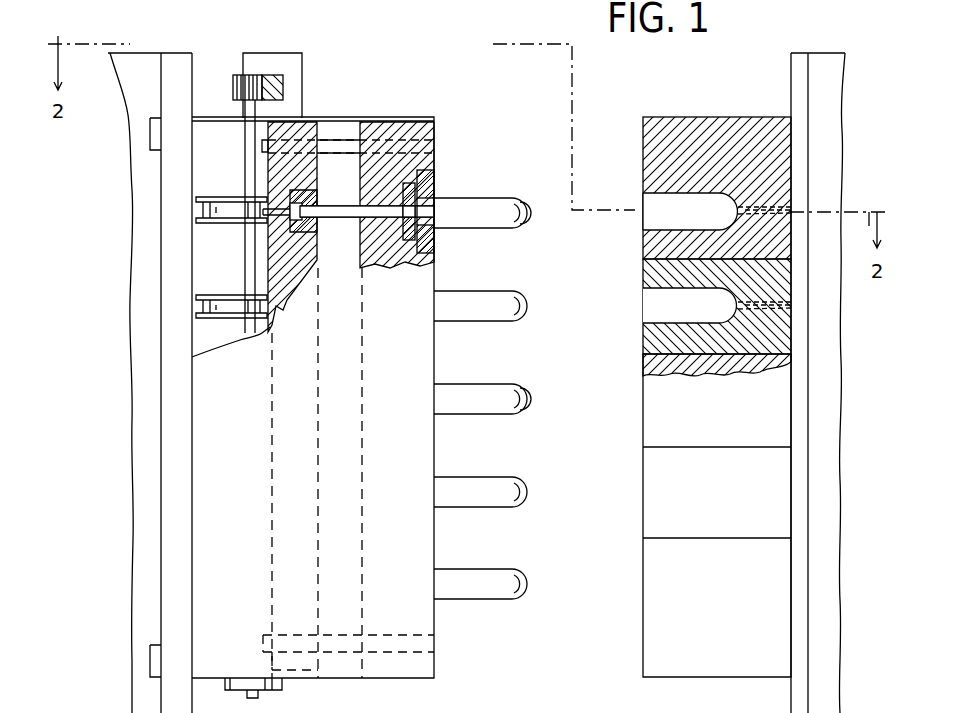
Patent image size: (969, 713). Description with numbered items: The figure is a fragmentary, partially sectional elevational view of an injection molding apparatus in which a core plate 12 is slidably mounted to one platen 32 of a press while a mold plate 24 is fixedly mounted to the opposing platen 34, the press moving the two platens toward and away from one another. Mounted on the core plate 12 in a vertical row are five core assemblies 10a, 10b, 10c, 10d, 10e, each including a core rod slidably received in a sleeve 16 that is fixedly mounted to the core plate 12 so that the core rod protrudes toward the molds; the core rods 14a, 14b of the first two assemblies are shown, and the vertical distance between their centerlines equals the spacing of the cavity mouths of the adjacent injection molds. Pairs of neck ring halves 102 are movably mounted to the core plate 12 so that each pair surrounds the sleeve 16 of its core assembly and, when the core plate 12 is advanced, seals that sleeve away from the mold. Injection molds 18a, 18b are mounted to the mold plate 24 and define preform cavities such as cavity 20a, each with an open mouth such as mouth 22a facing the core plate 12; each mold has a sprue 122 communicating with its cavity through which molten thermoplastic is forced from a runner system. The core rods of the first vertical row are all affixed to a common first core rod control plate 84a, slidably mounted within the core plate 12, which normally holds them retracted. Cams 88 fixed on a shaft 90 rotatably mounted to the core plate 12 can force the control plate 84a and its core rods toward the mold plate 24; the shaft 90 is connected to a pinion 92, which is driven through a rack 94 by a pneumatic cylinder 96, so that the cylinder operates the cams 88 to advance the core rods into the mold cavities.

The platen 32 is at (151, 62).
The shaft 90 is at (243, 110).
The pinion 92 is at (237, 75).
The rack 94 is at (282, 87).
The pneumatic cylinder 96 is at (296, 63).
The core plate 12 is at (404, 112).
The sleeve 16 is at (410, 184).
The neck ring halves 102 is at (432, 176).
The core assembly 10a is at (472, 194).
The core assembly 10b is at (463, 286).
The core assembly 10c is at (463, 378).
The core assembly 10d is at (463, 471).
The core assembly 10e is at (463, 564).
The core rod 14a is at (530, 199).
The core rod 14b is at (530, 381).
The cams 88 is at (217, 290).
The first core rod control plate 84a is at (305, 598).
The injection mold 18a is at (640, 128).
The injection mold 18b is at (636, 264).
The preform cavity 20a is at (677, 208).
The cavity mouth 22a is at (645, 208).
The mold plate 24 is at (798, 77).
The platen 34 is at (822, 60).
The sprue 122 is at (775, 208).